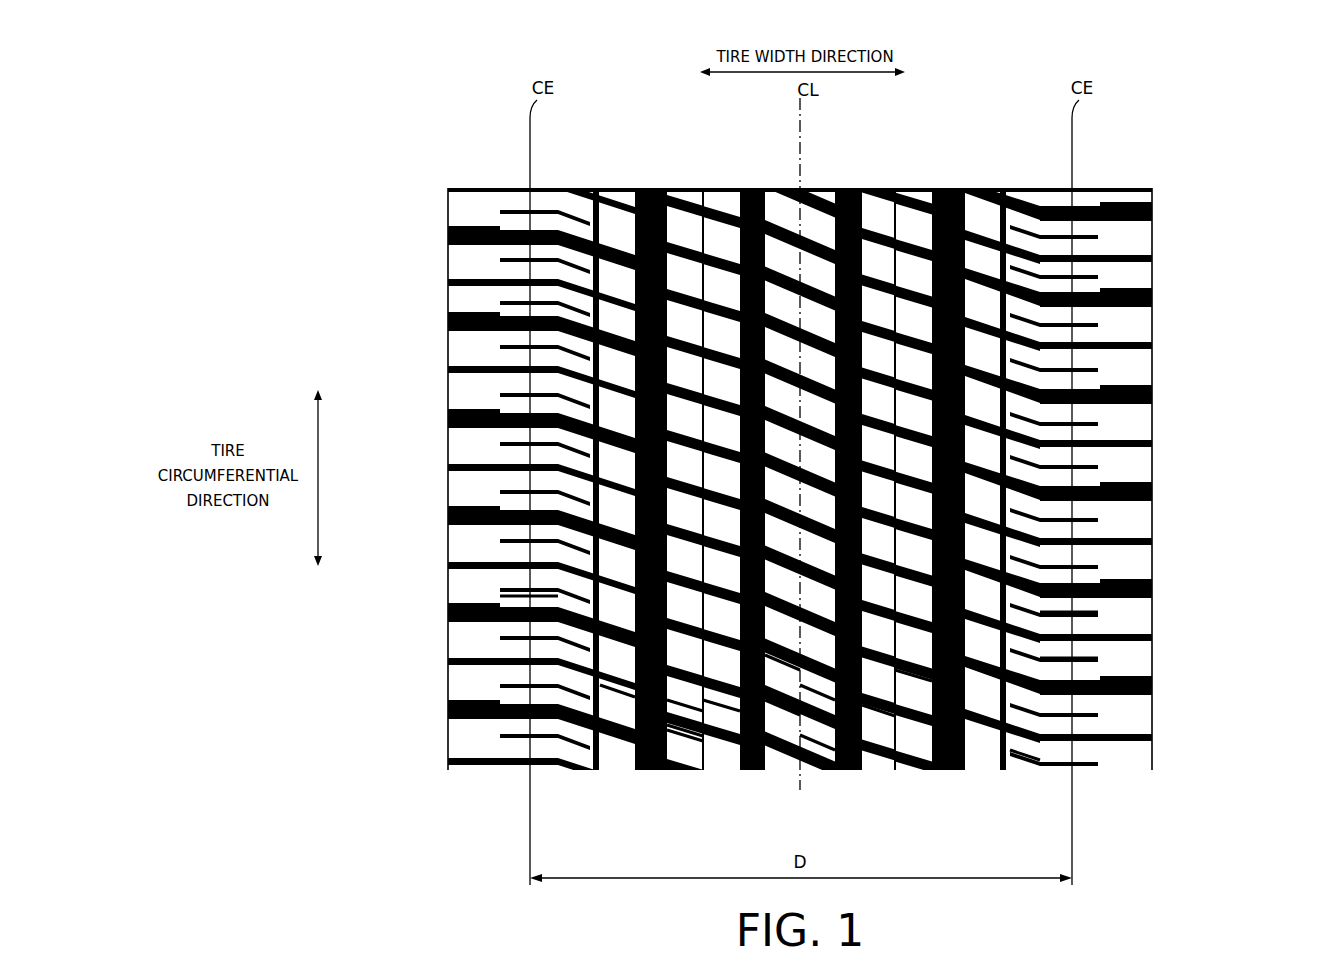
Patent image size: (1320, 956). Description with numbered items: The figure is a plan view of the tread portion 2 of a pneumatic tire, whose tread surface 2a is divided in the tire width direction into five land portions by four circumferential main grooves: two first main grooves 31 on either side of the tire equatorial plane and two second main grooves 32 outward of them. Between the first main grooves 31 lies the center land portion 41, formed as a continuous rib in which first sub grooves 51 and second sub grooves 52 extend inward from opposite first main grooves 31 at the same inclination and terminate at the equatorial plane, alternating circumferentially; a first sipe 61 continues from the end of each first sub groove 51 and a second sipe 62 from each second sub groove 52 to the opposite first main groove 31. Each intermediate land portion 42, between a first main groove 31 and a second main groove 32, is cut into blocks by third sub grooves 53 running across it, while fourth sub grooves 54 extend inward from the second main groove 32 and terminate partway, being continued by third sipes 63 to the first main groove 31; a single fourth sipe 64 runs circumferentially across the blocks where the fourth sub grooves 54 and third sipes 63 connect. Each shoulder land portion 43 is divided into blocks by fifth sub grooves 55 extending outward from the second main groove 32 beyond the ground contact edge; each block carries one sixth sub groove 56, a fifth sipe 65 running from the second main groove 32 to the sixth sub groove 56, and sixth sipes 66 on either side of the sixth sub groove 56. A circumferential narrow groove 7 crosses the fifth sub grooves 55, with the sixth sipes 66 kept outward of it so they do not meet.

The tread portion 2 is at (986, 220).
The tread surface 2a is at (718, 233).
The circumferential narrow groove 7 is at (600, 225).
The first main groove 31 is at (752, 225).
The second main groove 32 is at (649, 200).
The center land portion 41 is at (820, 230).
The intermediate land portion 42 is at (684, 215).
The shoulder land portion 43 is at (568, 205).
The first sub groove 51 is at (788, 672).
The second sub groove 52 is at (815, 693).
The third sub groove 53 is at (688, 733).
The fourth sub groove 54 is at (708, 742).
The fifth sub groove 55 is at (470, 727).
The sixth sub groove 56 is at (470, 670).
The first sipe 61 is at (812, 744).
The second sipe 62 is at (775, 707).
The third sipe 63 is at (748, 702).
The fourth sipe 64 is at (700, 707).
The fifth sipe 65 is at (613, 685).
The sixth sipe 66 is at (512, 651).